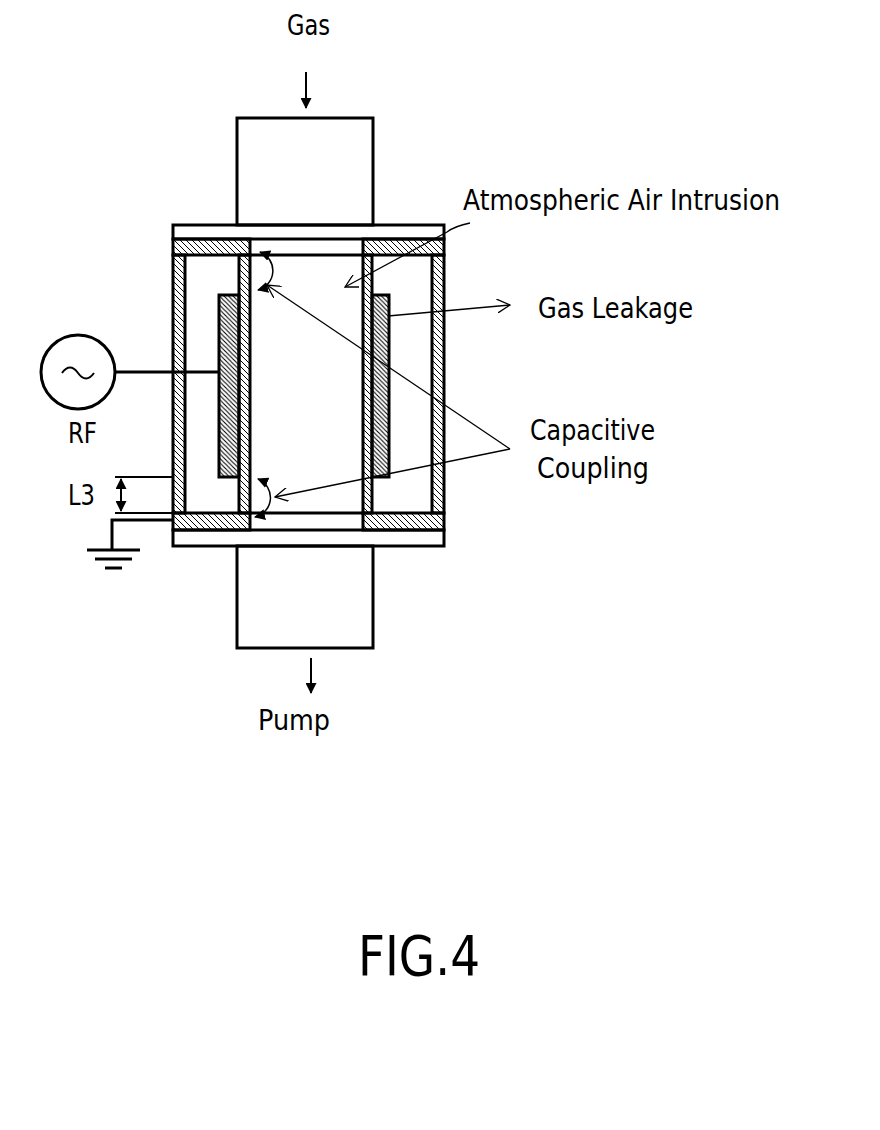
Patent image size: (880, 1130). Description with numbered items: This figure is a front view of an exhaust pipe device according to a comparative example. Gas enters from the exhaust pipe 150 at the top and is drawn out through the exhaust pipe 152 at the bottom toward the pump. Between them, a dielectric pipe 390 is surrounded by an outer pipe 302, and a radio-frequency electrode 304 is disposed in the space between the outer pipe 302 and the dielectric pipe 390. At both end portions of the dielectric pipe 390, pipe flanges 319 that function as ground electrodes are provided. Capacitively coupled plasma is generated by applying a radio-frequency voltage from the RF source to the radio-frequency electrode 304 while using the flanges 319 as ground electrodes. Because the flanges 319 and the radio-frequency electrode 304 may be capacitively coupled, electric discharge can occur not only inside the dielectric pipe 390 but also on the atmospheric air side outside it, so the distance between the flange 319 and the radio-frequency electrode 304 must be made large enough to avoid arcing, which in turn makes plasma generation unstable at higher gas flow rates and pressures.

The exhaust pipe 150 is at (375, 151).
The exhaust pipe 152 is at (375, 633).
The outer pipe 302 is at (444, 505).
The radio-frequency electrode 304 is at (390, 305).
The pipe flange 319 is at (420, 547).
The dielectric pipe 390 is at (388, 390).